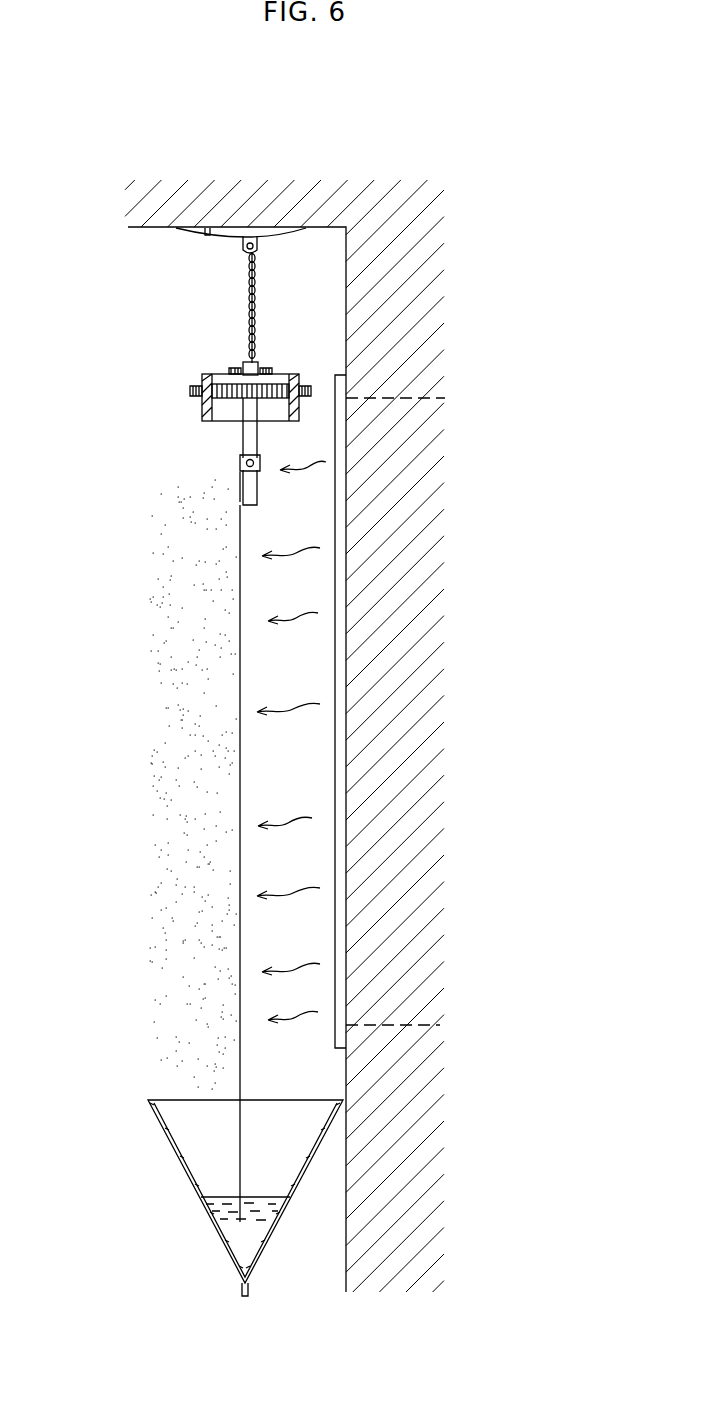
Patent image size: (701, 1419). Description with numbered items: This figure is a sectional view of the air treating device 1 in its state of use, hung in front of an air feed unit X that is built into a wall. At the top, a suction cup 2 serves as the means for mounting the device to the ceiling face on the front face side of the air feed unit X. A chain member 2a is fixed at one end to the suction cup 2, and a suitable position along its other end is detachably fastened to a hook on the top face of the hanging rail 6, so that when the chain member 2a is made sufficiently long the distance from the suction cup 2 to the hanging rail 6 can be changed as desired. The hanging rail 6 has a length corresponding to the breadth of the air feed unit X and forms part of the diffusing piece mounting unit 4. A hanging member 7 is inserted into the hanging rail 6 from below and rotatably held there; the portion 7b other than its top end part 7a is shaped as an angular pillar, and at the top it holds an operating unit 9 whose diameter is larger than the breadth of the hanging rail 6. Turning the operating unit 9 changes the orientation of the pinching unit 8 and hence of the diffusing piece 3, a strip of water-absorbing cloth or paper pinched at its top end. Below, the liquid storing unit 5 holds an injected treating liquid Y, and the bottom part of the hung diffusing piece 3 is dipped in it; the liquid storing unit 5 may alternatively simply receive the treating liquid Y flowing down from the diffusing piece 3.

The humidifier apparatus 1 is at (104, 413).
The suction cup 2 is at (231, 238).
The chain member 2a is at (256, 298).
The diffusing piece 3 is at (240, 648).
The diffusing piece mounting unit 4 is at (184, 365).
The liquid storing unit 5 is at (178, 1160).
The hanging rail 6 is at (284, 378).
The hanging member 7 is at (235, 431).
The top end part 7a is at (245, 363).
The portion other than the top end part 7b is at (248, 437).
The pinching unit 8 is at (243, 483).
The operating unit 9 is at (190, 390).
The air feed unit X is at (335, 578).
The treating liquid Y is at (265, 1202).